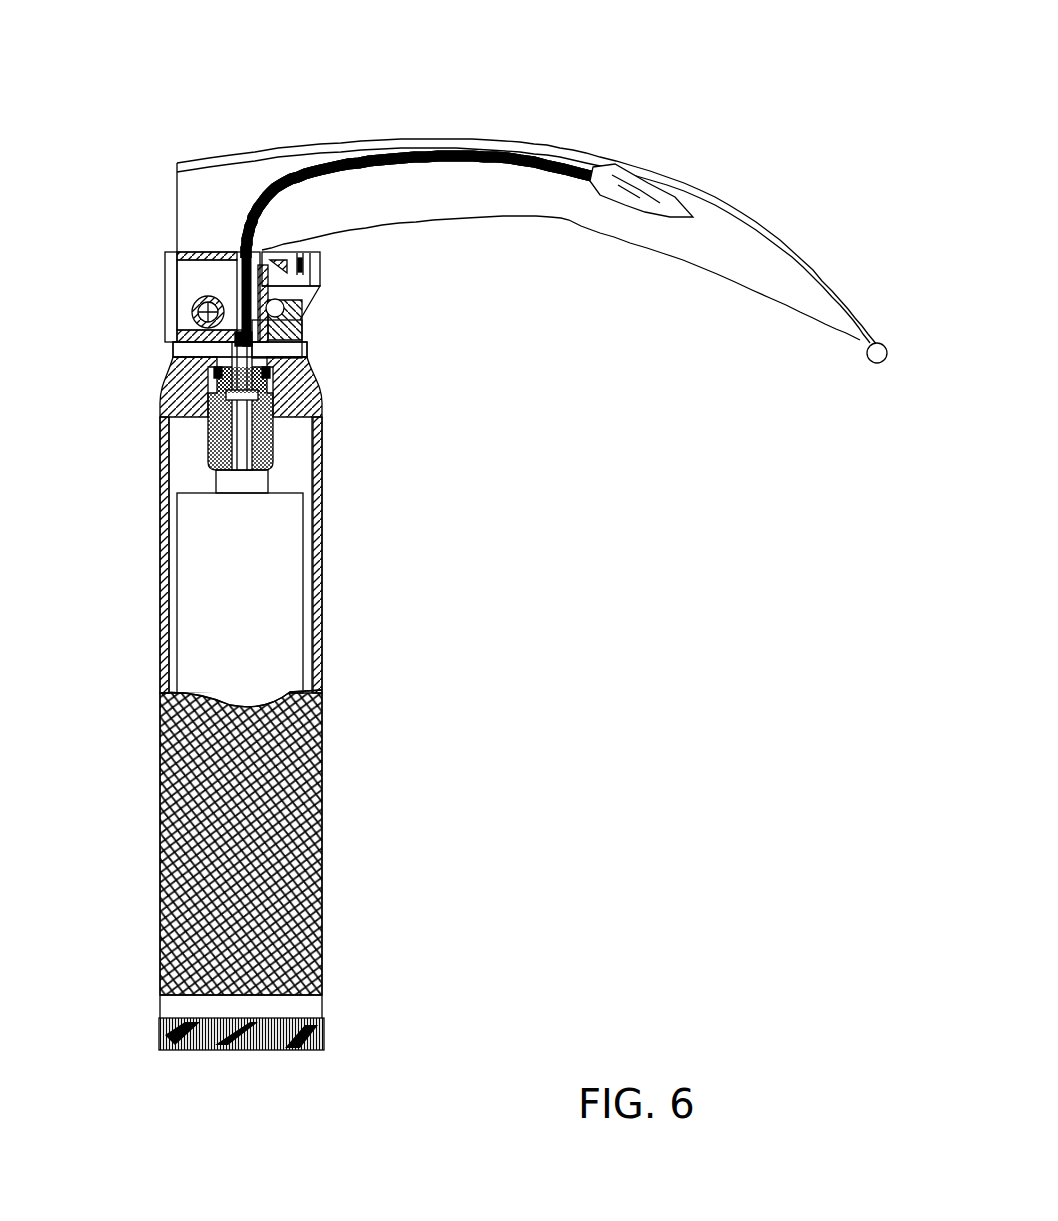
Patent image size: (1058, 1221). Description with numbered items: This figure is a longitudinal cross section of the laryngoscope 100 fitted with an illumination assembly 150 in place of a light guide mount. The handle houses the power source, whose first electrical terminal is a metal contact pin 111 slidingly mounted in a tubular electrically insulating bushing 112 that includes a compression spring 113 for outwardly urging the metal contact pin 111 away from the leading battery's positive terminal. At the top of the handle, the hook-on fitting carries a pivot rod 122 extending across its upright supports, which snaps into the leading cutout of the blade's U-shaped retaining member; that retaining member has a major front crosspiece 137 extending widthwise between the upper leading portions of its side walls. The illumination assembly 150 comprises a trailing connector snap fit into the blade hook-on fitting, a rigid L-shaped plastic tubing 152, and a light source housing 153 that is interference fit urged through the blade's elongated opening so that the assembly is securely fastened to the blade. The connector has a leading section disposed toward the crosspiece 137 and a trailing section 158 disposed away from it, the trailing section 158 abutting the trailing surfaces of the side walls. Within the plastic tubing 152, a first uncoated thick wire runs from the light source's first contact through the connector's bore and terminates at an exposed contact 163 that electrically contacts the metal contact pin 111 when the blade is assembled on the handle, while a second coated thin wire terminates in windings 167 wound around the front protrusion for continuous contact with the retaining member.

The laryngoscope 100 is at (698, 50).
The illumination assembly 150 is at (697, 112).
The plastic tubing 152 is at (541, 162).
The light source housing 153 is at (627, 195).
The windings 167 is at (297, 262).
The major front crosspiece 137 is at (320, 270).
The pivot rod 122 is at (292, 308).
The trailing section 158 is at (165, 288).
The exposed contact 163 is at (200, 331).
The metal contact pin 111 is at (283, 373).
The tubular electrically insulating bushing 112 is at (274, 453).
The compression spring 113 is at (207, 438).